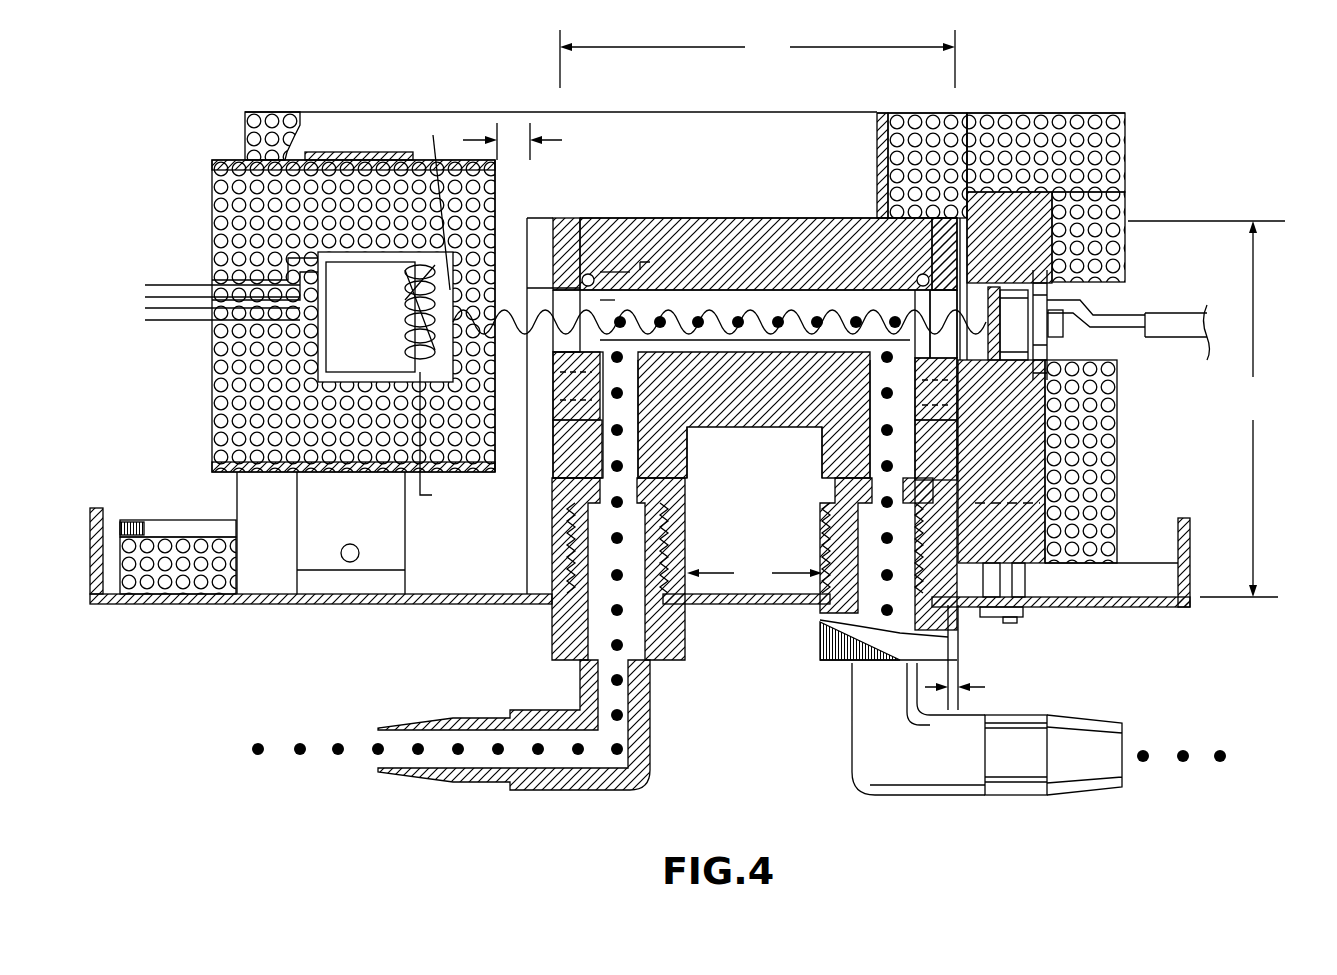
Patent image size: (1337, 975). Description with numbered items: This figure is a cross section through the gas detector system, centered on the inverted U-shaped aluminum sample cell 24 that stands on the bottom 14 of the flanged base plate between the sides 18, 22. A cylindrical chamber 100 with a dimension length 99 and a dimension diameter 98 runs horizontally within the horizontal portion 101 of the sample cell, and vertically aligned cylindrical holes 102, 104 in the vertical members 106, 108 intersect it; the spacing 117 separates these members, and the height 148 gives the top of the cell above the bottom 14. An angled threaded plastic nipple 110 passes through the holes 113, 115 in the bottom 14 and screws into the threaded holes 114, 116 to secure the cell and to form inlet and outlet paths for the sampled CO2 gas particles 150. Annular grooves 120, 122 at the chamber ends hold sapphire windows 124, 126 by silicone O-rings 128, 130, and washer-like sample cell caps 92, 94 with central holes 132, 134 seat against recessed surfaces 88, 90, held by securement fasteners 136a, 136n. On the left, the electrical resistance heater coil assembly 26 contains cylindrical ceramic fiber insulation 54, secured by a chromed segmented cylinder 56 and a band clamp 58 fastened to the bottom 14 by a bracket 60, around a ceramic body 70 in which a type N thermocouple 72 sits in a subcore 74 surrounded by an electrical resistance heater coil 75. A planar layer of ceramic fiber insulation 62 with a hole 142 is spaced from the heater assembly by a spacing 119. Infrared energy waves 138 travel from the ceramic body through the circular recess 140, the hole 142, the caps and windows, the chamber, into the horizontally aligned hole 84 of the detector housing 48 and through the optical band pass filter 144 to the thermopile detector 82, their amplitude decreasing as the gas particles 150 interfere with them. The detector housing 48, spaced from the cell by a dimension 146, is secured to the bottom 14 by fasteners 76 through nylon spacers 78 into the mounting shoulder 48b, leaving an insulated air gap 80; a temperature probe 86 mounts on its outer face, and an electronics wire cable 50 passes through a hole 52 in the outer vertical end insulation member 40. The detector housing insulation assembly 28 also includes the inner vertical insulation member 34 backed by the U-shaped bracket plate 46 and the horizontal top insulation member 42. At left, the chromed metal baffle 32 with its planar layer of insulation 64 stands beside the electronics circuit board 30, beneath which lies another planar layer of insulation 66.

The bottom 14 is at (1169, 609).
The side 18 is at (96, 508).
The side 22 is at (1188, 531).
The aluminum sample cell 24 is at (782, 206).
The electrical resistance heater coil assembly 26 is at (186, 205).
The detector housing insulation assembly 28 is at (1167, 135).
The electronics circuit board 30 is at (214, 527).
The chromed metal baffle 32 is at (513, 137).
The inner vertical insulation member 34 is at (940, 160).
The outer vertical end insulation member 40 is at (1105, 222).
The horizontal top insulation member 42 is at (1042, 125).
The U-shaped bracket plate 46 is at (882, 112).
The detector housing 48 is at (1037, 467).
The mounting shoulder 48b is at (1033, 503).
The electronics wire cable 50 is at (1179, 320).
The hole 52 is at (1117, 305).
The ceramic fiber insulation 54 is at (460, 477).
The chromed segmented cylinder 56 is at (447, 160).
The band clamp 58 is at (357, 160).
The bracket 60 is at (397, 578).
The ceramic fiber insulation 62 is at (540, 217).
The planar layer of insulation 64 is at (253, 127).
The planar layer of insulation 66 is at (190, 600).
The ceramic body 70 is at (433, 135).
The type N thermocouple 72 is at (412, 293).
The subcore 74 is at (416, 328).
The electrical resistance heater coil 75 is at (439, 439).
The fasteners 76 is at (1015, 621).
The spacers 78 is at (1035, 610).
The insulated air gap 80 is at (1098, 575).
The thermopile detector 82 is at (1022, 290).
The horizontally aligned hole 84 is at (972, 292).
The temperature probe 86 is at (1067, 331).
The recessed surface 88 is at (560, 231).
The recessed surface 90 is at (960, 410).
The sample cell cap 92 is at (565, 221).
The sample cell cap 94 is at (942, 160).
The dimension diameter 98 is at (760, 276).
The dimension length 99 is at (757, 59).
The cylindrical chamber 100 is at (683, 342).
The horizontal portion 101 is at (770, 217).
The cylindrical hole 102 is at (630, 445).
The cylindrical hole 104 is at (875, 438).
The vertical member 106 is at (688, 480).
The vertical member 108 is at (822, 482).
The threaded plastic nipple 110 is at (583, 792).
The hole 113 is at (695, 603).
The threaded hole 114 is at (662, 560).
The hole 115 is at (812, 603).
The threaded hole 116 is at (822, 550).
The spacing 117 is at (754, 573).
The spacing 119 is at (533, 140).
The annular groove 120 is at (640, 263).
The annular groove 122 is at (925, 282).
The sapphire window 124 is at (596, 312).
The sapphire window 126 is at (925, 290).
The silicone O-ring 128 is at (657, 270).
The silicone O-ring 130 is at (865, 280).
The hole 132 is at (553, 357).
The hole 134 is at (957, 350).
The securement fastener 136a is at (553, 400).
The securement fastener 136n is at (932, 382).
The infrared energy waves 138 is at (685, 322).
The circular recess 140 is at (490, 297).
The hole 142 is at (553, 330).
The optical band pass filter 144 is at (1025, 293).
The dimension 146 is at (987, 700).
The height 148 is at (1206, 409).
The sampled CO2 gas particles 150 is at (256, 760).